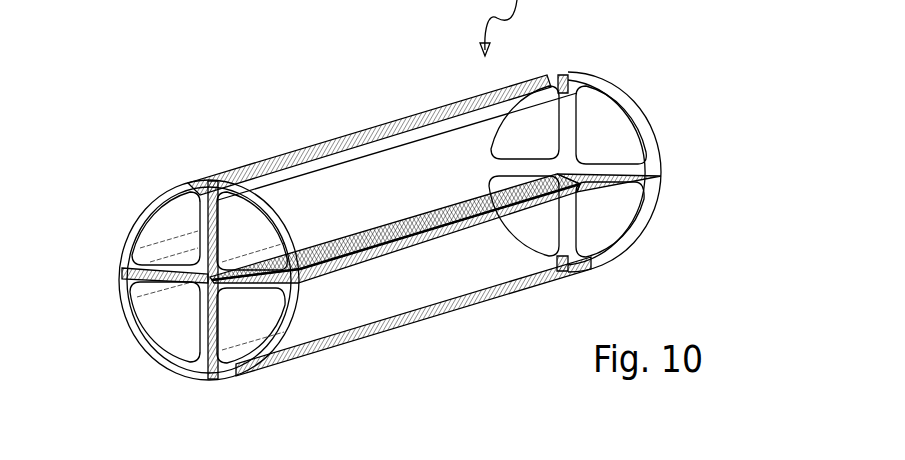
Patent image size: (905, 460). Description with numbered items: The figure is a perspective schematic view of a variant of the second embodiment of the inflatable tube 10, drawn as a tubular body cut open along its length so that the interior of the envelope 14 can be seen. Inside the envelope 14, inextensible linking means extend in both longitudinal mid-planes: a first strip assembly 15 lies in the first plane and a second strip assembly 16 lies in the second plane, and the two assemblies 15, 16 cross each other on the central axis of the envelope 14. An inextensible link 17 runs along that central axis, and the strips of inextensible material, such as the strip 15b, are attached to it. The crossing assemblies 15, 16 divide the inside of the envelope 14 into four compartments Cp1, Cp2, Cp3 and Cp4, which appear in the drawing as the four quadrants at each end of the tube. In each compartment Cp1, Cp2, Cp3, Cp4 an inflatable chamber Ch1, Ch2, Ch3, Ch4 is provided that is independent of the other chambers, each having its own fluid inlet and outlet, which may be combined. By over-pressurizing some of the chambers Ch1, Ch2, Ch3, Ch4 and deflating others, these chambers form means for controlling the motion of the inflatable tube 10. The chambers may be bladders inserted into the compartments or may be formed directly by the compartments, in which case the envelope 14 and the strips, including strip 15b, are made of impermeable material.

The inflatable tube 10 is at (473, 459).
The envelope 14 is at (422, 110).
The first strip assembly 15 is at (203, 190).
The second strip of inextensible material 15b is at (181, 90).
The second strip assembly 16 is at (136, 277).
The inextensible link 17 is at (207, 279).
The inflatable chamber Ch1 is at (162, 224).
The inflatable chamber Ch2 is at (613, 137).
The inflatable chamber Ch3 is at (170, 328).
The inflatable chamber Ch4 is at (237, 331).
The compartment Cp1 is at (170, 195).
The compartment Cp2 is at (217, 197).
The compartment Cp3 is at (142, 333).
The compartment Cp4 is at (238, 438).